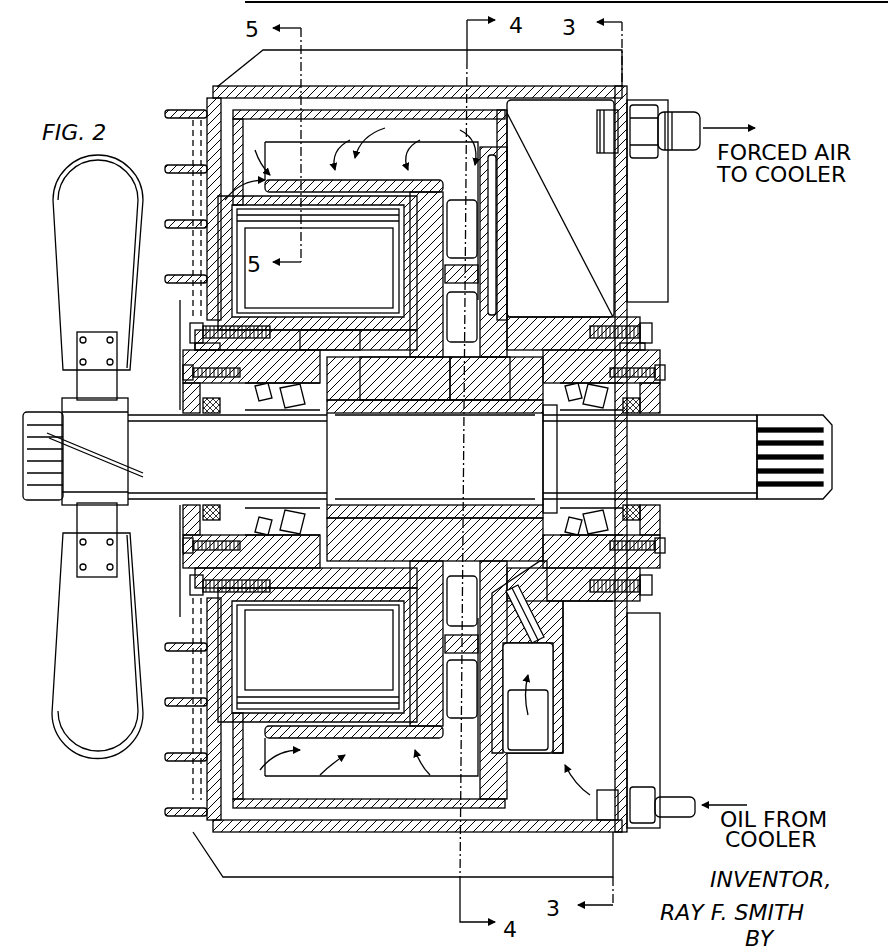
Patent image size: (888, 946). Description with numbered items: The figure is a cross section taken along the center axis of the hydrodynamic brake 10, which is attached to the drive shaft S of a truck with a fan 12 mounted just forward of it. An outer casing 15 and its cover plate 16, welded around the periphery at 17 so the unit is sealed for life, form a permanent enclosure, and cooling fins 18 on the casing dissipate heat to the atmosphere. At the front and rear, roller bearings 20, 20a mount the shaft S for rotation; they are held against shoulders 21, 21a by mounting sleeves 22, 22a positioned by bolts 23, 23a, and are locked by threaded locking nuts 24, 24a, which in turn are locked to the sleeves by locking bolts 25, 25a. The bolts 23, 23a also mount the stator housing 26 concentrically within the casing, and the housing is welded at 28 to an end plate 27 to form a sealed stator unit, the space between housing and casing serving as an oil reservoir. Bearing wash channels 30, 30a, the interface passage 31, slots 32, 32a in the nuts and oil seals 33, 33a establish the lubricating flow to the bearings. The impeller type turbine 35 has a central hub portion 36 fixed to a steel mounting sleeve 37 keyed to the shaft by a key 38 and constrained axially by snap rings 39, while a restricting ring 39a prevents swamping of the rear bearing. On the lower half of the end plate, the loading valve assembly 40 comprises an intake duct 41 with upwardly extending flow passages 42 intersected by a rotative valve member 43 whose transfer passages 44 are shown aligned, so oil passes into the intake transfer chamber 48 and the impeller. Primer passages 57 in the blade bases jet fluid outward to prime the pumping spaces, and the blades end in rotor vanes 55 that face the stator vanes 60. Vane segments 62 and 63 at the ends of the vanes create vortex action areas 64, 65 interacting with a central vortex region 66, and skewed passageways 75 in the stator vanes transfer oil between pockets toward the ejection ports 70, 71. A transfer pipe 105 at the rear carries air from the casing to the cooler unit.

The hydrodynamic brake 10 is at (698, 82).
The fan 12 is at (107, 691).
The outer casing 15 is at (213, 107).
The cover plate 16 is at (625, 243).
The weld 17 is at (623, 90).
The cooling fins 18 is at (652, 628).
The roller bearing 20 is at (270, 350).
The roller bearing 20a is at (570, 322).
The shoulder 21 is at (322, 437).
The shoulder 21a is at (555, 439).
The mounting sleeve 22 is at (200, 353).
The mounting sleeve 22a is at (635, 358).
The bolts 23 is at (193, 330).
The bolts 23a is at (653, 333).
The threaded locking nut 24 is at (193, 390).
The threaded locking nut 24a is at (653, 390).
The locking bolt 25 is at (187, 376).
The locking bolt 25a is at (660, 372).
The stator housing 26 is at (373, 87).
The end plate 27 is at (502, 153).
The peripheral weld 28 is at (507, 113).
The bearing wash channel 30 is at (280, 320).
The bearing wash channel 30a is at (580, 320).
The interface passage 31 is at (262, 349).
The slot 32 is at (260, 392).
The slot 32a is at (600, 396).
The oil seal 33 is at (213, 418).
The oil seal 33a is at (633, 415).
The impeller type turbine 35 is at (428, 236).
The central hub portion 36 is at (355, 362).
The steel mounting sleeve 37 is at (397, 400).
The key 38 is at (450, 400).
The snap rings 39 is at (330, 383).
The restricting ring 39a is at (573, 567).
The loading valve assembly 40 is at (583, 660).
The intake duct 41 is at (538, 715).
The flow passages 42 is at (540, 638).
The rotative valve member 43 is at (563, 612).
The transfer passages 44 is at (528, 698).
The intake transfer chamber 48 is at (516, 567).
The rotor vanes 55 is at (319, 459).
The primer passages 57 is at (498, 333).
The stator vanes 60 is at (415, 130).
The vane segments 62 is at (252, 160).
The vane segments 63 is at (500, 170).
The vortex action area 64 is at (302, 133).
The vortex action area 65 is at (473, 135).
The central vortex region 66 is at (397, 153).
The ejection ports 70 is at (268, 100).
The ejection ports 71 is at (233, 782).
The passageway 75 is at (280, 155).
The transfer pipe 105 is at (677, 152).
The drive shaft S is at (740, 427).